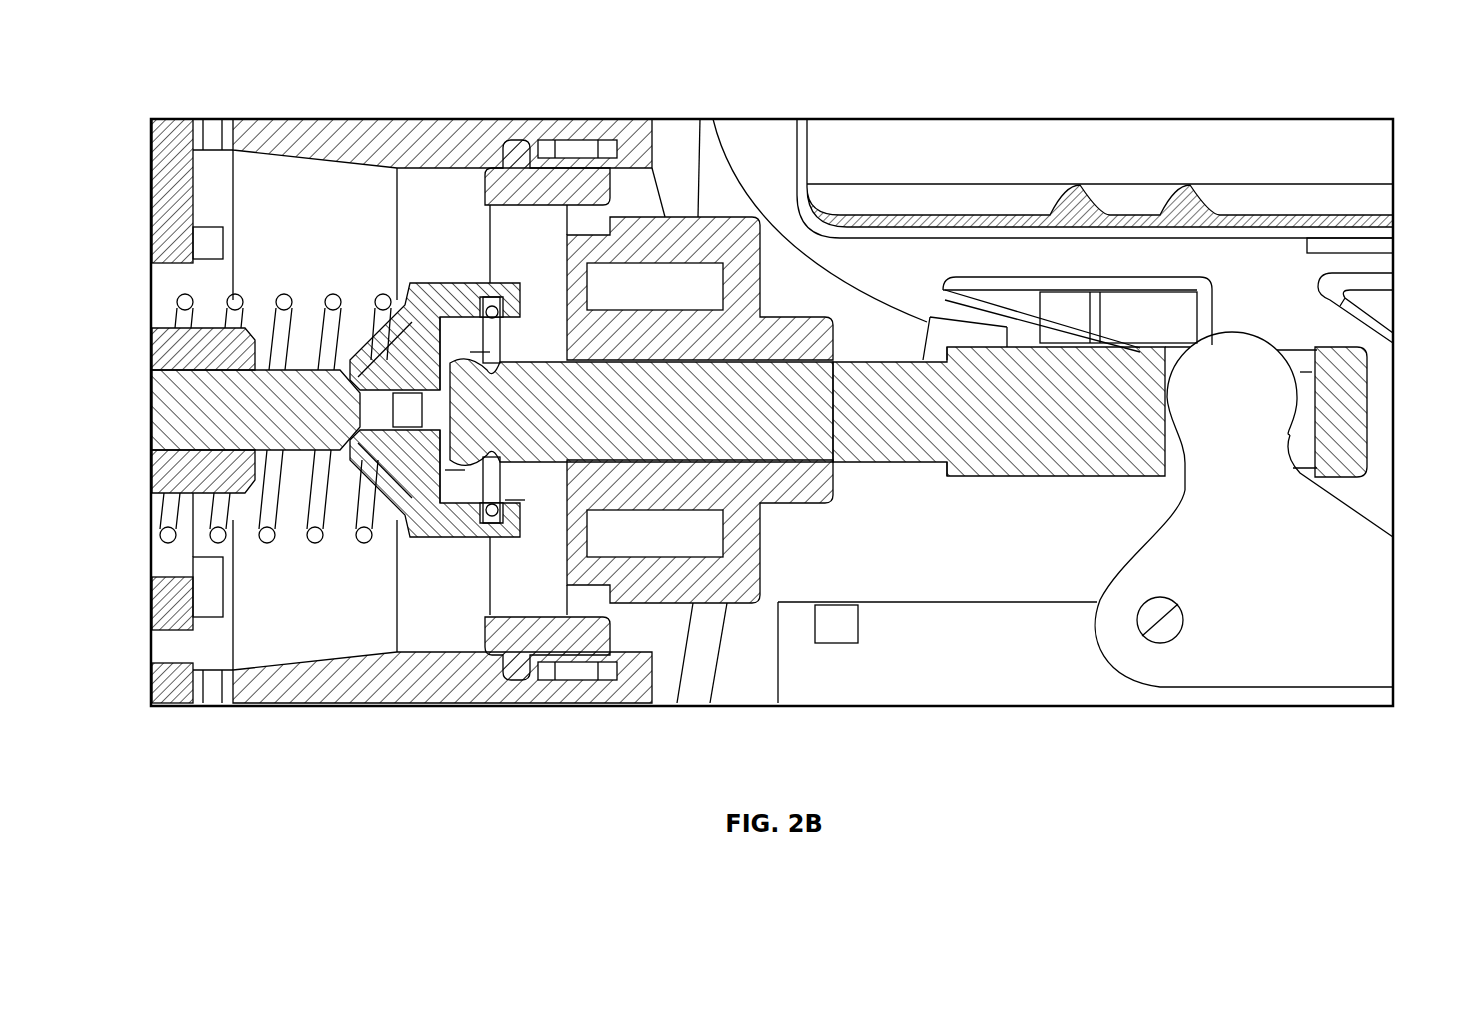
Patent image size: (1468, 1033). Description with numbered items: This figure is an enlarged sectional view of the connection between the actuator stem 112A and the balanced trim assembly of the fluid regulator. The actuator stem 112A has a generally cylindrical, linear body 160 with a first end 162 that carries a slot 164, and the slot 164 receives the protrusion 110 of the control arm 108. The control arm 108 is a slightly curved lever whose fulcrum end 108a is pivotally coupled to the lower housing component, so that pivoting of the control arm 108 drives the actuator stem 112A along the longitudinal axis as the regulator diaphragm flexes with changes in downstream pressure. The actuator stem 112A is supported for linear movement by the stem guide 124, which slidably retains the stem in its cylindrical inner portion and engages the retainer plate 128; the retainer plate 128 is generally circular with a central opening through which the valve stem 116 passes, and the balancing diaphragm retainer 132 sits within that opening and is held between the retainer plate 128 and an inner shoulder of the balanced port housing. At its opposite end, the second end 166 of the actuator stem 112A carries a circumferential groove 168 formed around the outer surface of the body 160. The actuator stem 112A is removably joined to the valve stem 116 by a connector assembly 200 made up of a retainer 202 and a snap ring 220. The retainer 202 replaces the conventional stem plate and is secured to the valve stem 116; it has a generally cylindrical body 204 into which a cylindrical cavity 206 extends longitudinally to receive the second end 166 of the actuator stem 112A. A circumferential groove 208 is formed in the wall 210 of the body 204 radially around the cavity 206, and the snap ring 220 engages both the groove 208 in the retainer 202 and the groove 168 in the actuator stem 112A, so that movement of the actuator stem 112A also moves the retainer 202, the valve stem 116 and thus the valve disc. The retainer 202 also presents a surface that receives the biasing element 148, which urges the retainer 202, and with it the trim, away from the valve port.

The control arm 108 is at (1333, 655).
The fulcrum end 108a is at (1145, 660).
The protrusion 110 is at (1245, 355).
The actuator stem 112A is at (988, 478).
The valve stem 116 is at (165, 412).
The stem guide 124 is at (693, 583).
The retainer plate 128 is at (180, 130).
The balancing diaphragm retainer 132 is at (178, 355).
The biasing element 148 is at (283, 300).
The body 160 is at (917, 450).
The first end 162 is at (1367, 377).
The slot 164 is at (1305, 370).
The second end 166 is at (478, 352).
The circumferential groove 168 is at (484, 298).
The connector assembly 200 is at (522, 262).
The retainer 202 is at (420, 538).
The body 204 is at (393, 493).
The cylindrical cavity 206 is at (453, 472).
The circumferential groove 208 is at (497, 487).
The wall 210 is at (438, 340).
The snap ring 220 is at (515, 500).